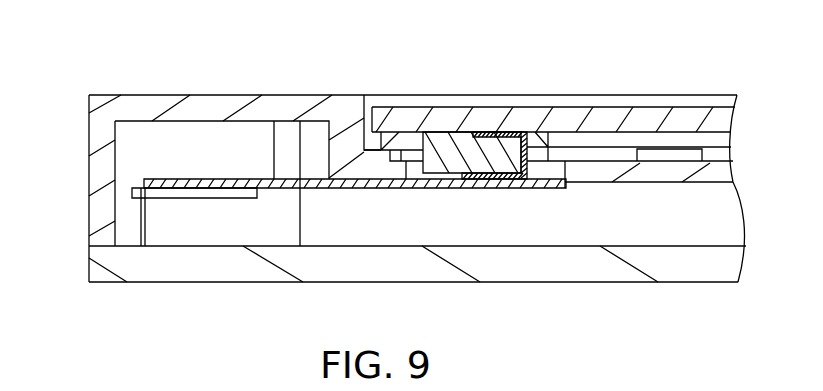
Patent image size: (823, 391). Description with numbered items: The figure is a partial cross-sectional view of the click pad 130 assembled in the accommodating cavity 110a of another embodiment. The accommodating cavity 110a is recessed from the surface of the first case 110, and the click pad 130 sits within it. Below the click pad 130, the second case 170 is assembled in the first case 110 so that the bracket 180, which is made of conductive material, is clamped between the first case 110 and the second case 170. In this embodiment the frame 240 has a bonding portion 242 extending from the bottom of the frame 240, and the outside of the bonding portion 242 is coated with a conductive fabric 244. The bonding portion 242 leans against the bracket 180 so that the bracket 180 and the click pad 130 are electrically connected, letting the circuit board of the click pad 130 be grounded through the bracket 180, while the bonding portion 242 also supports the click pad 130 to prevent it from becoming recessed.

The first case 110 is at (98, 133).
The accommodating cavity 110a is at (367, 96).
The click pad 130 is at (608, 118).
The second case 170 is at (89, 258).
The bracket 180 is at (143, 182).
The frame 240 is at (394, 144).
The bonding portion 242 is at (447, 161).
The conductive fabric 244 is at (485, 132).